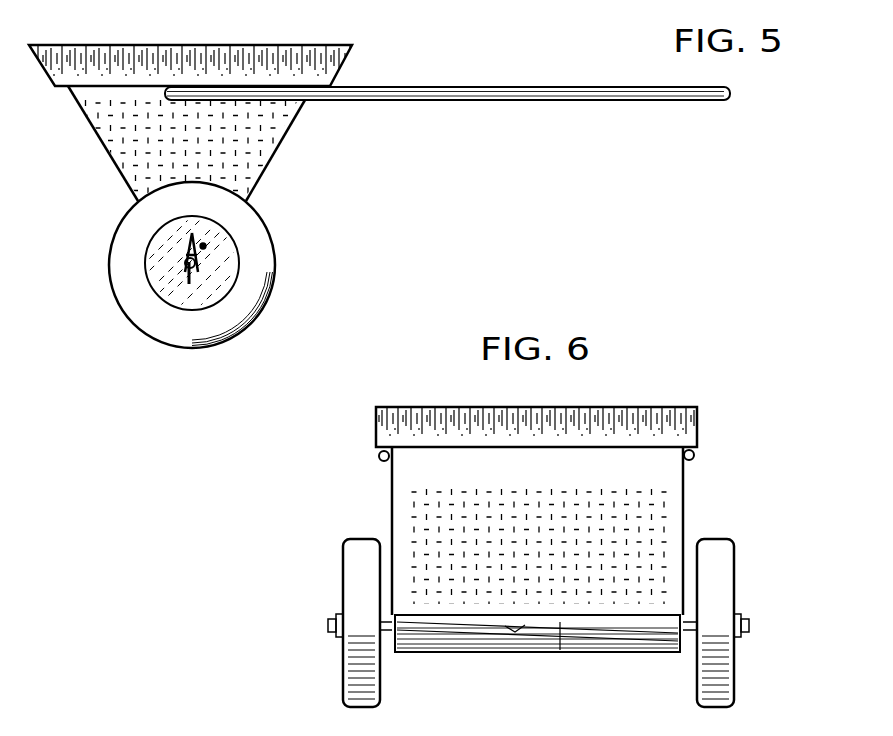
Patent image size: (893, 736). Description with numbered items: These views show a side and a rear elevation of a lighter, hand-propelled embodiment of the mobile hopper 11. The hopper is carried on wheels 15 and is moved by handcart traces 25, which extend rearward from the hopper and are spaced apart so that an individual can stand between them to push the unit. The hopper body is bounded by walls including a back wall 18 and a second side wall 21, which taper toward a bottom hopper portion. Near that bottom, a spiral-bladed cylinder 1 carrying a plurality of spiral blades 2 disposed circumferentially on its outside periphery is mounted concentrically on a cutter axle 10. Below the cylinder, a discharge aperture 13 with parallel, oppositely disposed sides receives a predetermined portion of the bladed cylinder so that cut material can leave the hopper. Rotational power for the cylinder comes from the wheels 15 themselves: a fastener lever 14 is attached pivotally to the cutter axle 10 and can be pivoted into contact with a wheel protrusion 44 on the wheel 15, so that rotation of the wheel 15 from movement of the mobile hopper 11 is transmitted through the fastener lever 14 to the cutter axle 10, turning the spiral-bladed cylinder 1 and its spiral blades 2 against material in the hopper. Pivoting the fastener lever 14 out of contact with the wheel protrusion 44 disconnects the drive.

In FIG. 6, the spiral-bladed cylinder 1 is at (497, 630).
In FIG. 6, the spiral blades 2 is at (517, 626).
In FIG. 5, the cutter axle 10 is at (203, 272).
In FIG. 6, the cutter axle 10 is at (385, 621).
In FIG. 5, the mobile hopper 11 is at (400, 0).
In FIG. 6, the mobile hopper 11 is at (664, 363).
In FIG. 6, the discharge aperture 13 is at (566, 622).
In FIG. 5, the fastener lever 14 is at (196, 236).
In FIG. 5, the wheels 15 is at (257, 270).
In FIG. 6, the wheels 15 is at (358, 557).
In FIG. 5, the back wall 18 is at (190, 65).
In FIG. 6, the back wall 18 is at (530, 506).
In FIG. 5, the second side wall 21 is at (200, 133).
In FIG. 5, the handcart traces 25 is at (561, 95).
In FIG. 6, the handcart traces 25 is at (378, 457).
In FIG. 5, the wheel protrusion 44 is at (205, 246).